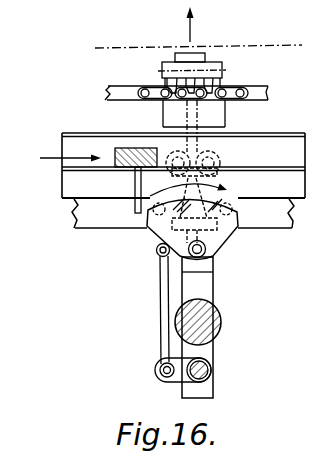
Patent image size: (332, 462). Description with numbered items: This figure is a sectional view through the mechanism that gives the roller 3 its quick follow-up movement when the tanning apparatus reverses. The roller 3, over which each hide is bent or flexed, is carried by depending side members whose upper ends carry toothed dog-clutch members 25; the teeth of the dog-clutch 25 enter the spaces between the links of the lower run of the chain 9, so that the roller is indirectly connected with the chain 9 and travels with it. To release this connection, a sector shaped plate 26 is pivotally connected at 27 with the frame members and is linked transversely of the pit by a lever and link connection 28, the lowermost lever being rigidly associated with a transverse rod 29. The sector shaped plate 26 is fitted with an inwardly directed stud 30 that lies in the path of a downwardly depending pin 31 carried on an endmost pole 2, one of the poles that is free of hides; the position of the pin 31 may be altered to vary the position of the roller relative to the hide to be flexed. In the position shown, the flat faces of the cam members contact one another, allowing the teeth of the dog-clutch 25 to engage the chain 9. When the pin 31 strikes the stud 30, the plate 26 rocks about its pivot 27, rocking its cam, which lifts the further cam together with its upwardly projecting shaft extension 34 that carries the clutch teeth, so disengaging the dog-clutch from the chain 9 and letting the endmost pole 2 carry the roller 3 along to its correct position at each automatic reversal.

The pole 2 is at (132, 148).
The roller 3 is at (222, 322).
The chain 9 is at (268, 90).
The toothed dog-clutch member 25 is at (162, 75).
The sector shaped plate 26 is at (164, 232).
The pivotal connection 27 is at (213, 253).
The lever and link connection 28 is at (161, 316).
The transverse rod 29 is at (211, 372).
The inwardly directed stud 30 is at (147, 224).
The downwardly depending pin 31 is at (137, 202).
The shaft extension 34 is at (234, 150).